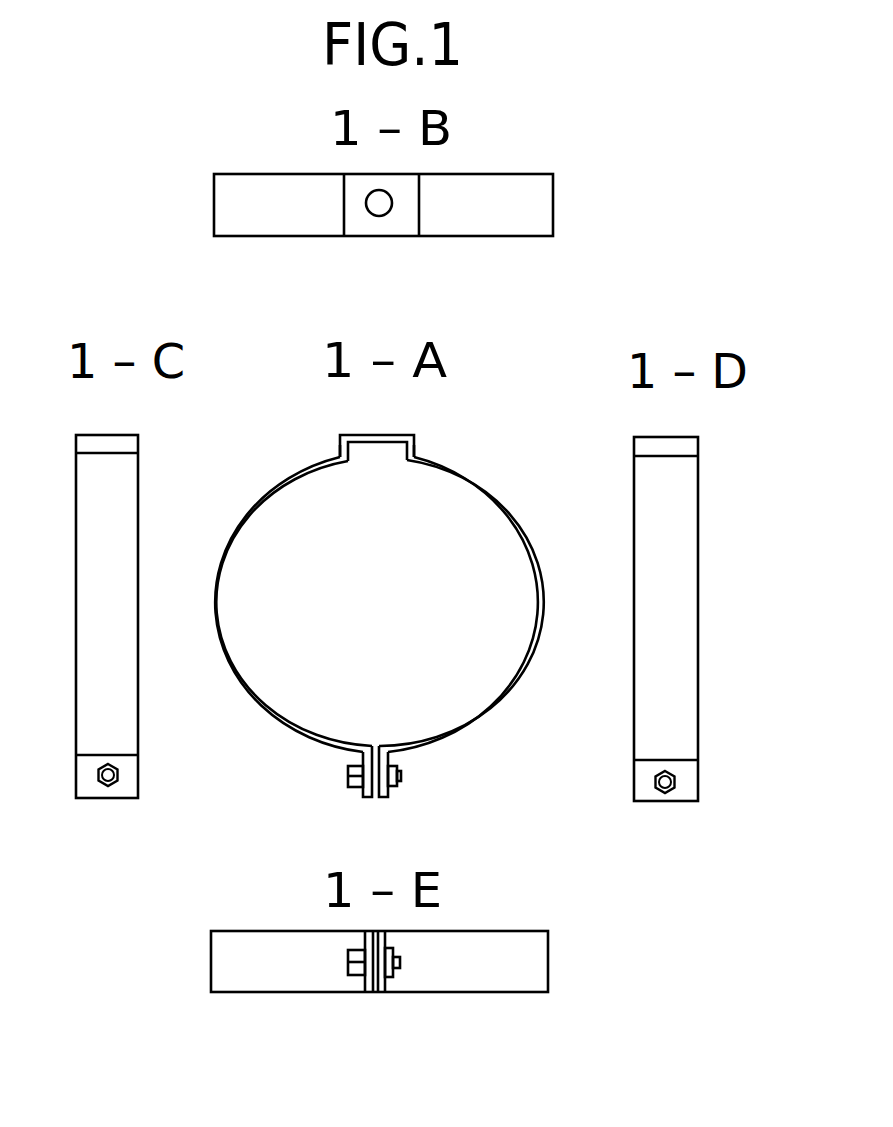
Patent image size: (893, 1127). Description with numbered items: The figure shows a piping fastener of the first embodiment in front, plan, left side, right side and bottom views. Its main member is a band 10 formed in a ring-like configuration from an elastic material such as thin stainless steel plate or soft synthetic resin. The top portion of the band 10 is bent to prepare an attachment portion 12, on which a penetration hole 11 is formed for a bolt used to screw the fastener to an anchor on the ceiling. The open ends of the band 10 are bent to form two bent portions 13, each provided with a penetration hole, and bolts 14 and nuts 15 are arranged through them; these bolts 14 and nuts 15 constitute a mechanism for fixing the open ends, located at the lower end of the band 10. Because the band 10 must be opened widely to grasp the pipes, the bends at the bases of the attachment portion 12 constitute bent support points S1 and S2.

The band 10 is at (507, 498).
The penetration hole 11 is at (384, 209).
The attachment portion 12 is at (411, 438).
The bent portion 13 is at (366, 794).
The bolt 14 is at (104, 783).
The nut 15 is at (669, 790).
The bent support point S1 is at (343, 458).
The bent support point S2 is at (411, 459).